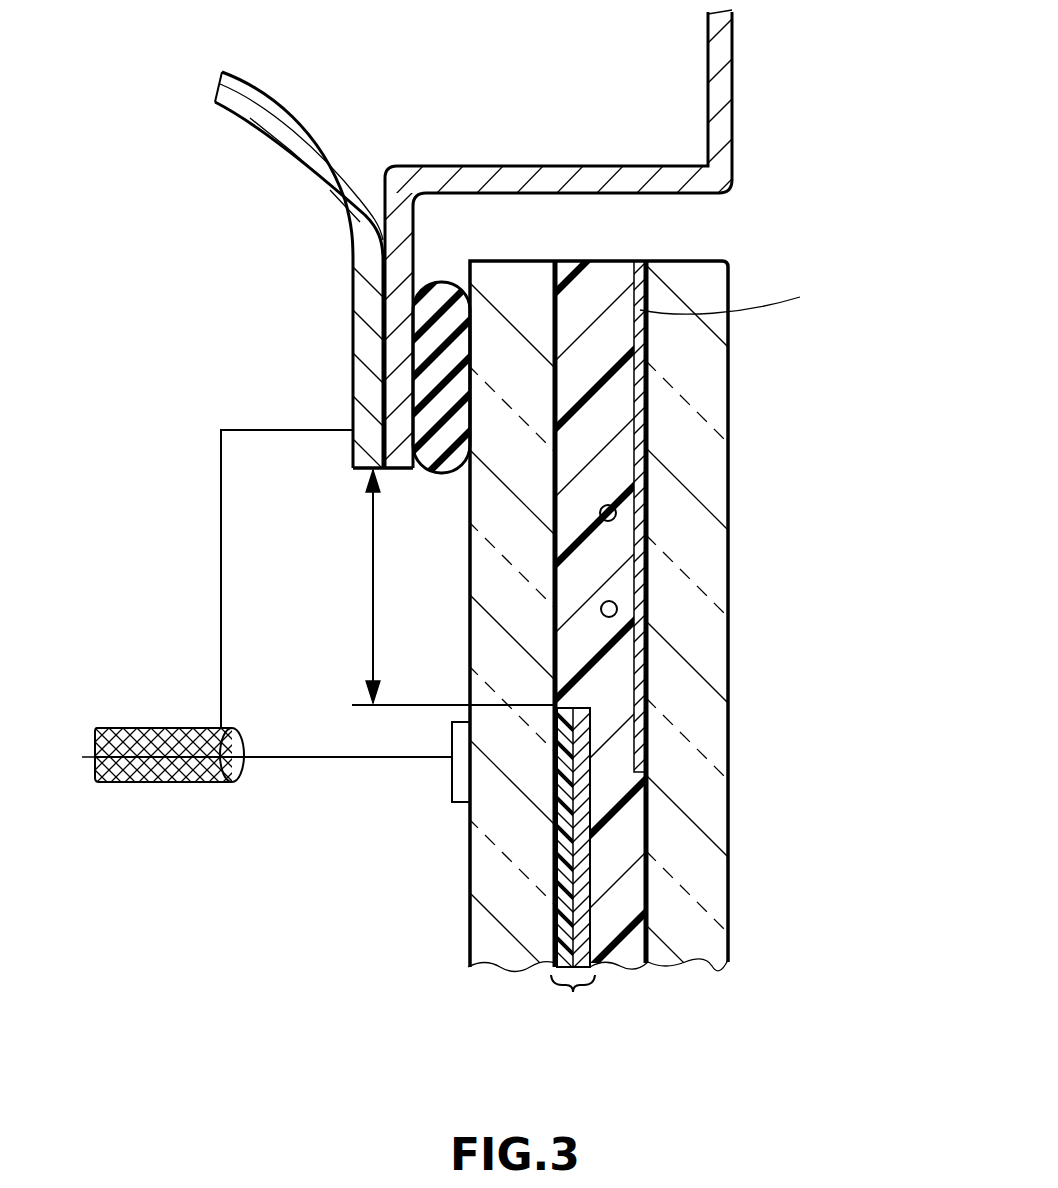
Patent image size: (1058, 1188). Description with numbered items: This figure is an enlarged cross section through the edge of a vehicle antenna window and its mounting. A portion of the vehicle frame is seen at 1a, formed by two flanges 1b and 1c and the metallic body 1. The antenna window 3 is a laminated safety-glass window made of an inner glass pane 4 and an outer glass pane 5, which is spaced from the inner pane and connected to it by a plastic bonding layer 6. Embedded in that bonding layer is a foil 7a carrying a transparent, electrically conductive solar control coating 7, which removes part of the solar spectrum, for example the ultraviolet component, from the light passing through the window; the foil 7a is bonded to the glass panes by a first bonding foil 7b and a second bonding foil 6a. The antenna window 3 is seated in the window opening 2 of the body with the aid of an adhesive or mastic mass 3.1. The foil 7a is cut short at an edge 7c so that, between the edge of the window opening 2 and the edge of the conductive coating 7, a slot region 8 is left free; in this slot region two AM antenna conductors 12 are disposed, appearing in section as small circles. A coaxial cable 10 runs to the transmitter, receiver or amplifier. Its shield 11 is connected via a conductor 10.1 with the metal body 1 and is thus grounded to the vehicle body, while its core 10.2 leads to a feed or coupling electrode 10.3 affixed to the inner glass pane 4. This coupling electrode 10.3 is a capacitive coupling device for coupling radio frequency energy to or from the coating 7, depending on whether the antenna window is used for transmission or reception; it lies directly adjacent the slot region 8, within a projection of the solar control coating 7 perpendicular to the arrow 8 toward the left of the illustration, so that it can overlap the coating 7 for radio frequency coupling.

The metallic body 1 is at (318, 213).
The frame portion 1a is at (362, 360).
The flange 1b is at (357, 453).
The flange 1c is at (402, 290).
The window opening 2 is at (597, 227).
The antenna window 3 is at (755, 381).
The adhesive or mastic mass 3.1 is at (442, 433).
The inner glass pane 4 is at (495, 907).
The outer glass pane 5 is at (707, 793).
The plastic bonding layer 6 is at (607, 460).
The second bonding foil 6a is at (650, 960).
The solar control coating 7 is at (590, 897).
The foil 7a is at (571, 1010).
The first bonding foil 7b is at (590, 843).
The edge 7c is at (568, 700).
The slot region 8 is at (372, 590).
The coaxial cable 10 is at (139, 810).
The conductor 10.1 is at (218, 517).
The core 10.2 is at (307, 762).
The feed or coupling electrode 10.3 is at (460, 777).
The shield 11 is at (130, 727).
The AM antenna conductors 12 is at (616, 513).